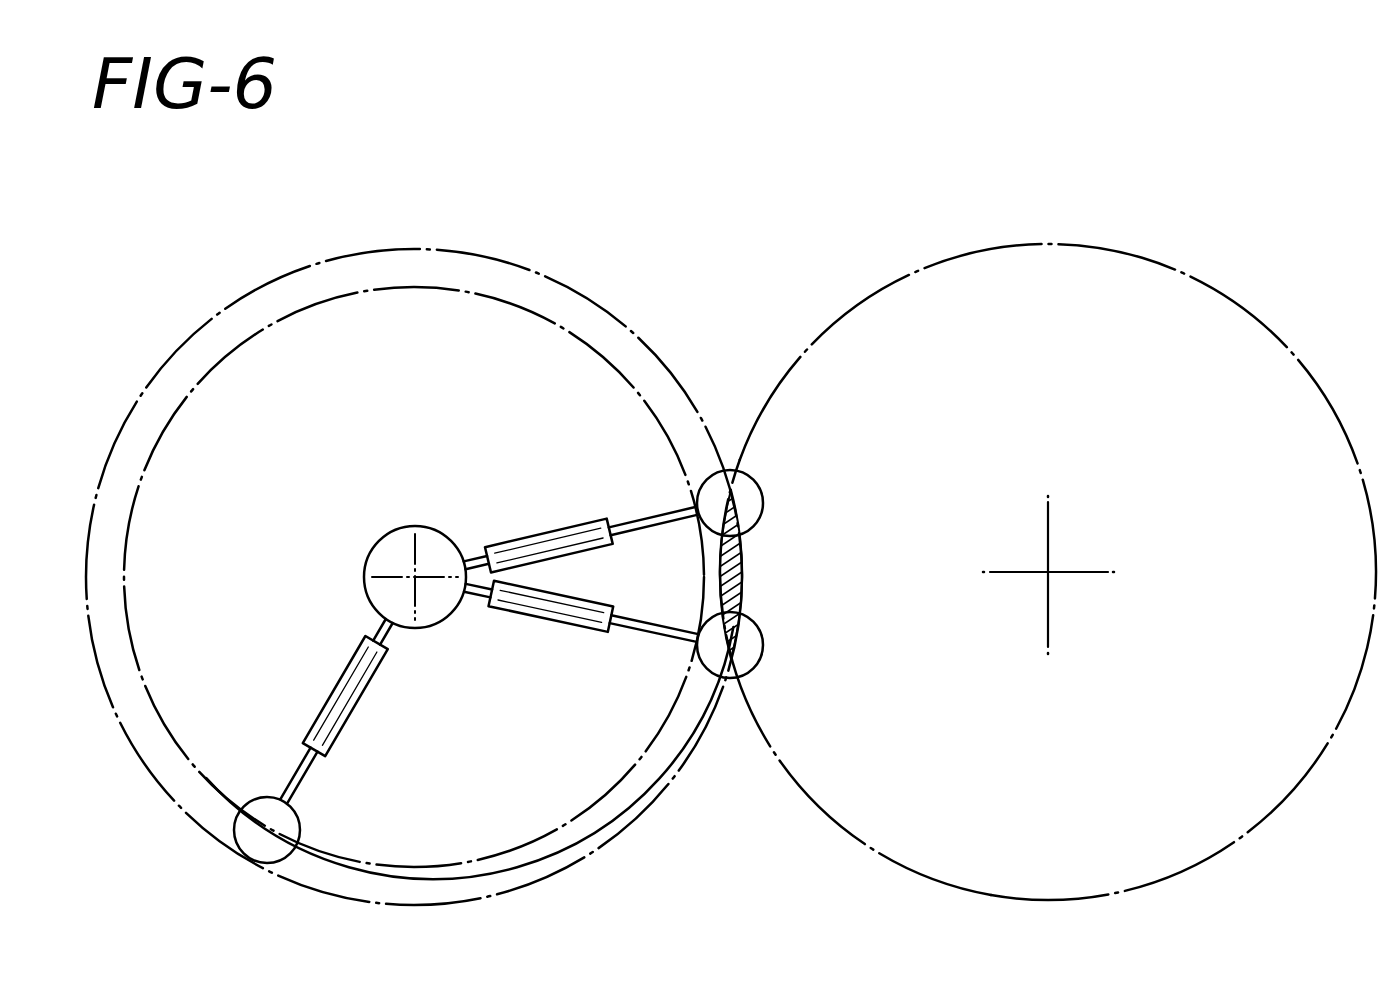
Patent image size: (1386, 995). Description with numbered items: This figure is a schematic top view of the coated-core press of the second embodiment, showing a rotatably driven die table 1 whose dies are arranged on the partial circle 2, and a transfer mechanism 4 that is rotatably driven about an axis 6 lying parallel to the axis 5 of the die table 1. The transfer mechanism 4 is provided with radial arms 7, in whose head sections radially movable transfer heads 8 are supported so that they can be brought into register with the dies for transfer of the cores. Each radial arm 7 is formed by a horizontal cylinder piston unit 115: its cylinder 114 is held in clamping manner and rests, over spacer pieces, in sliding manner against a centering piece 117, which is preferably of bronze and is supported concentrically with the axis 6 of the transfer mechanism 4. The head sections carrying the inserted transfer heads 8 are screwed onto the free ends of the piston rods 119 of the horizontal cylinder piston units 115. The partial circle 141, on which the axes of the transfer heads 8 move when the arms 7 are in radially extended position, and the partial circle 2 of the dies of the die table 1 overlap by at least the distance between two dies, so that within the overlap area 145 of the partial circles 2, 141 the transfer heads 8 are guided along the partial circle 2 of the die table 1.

The die table 1 is at (878, 266).
The partial circle 2 is at (800, 792).
The transfer mechanism 4 is at (632, 282).
The axis 5 is at (1050, 575).
The axis 6 is at (410, 568).
The radial arms 7 is at (557, 524).
The transfer heads 8 is at (722, 680).
The cylinders 114 is at (554, 624).
The horizontal cylinder piston units 115 is at (475, 602).
The centering piece 117 is at (437, 526).
The piston rods 119 is at (648, 634).
The partial circle 141 is at (292, 268).
The overlap area 145 is at (744, 550).